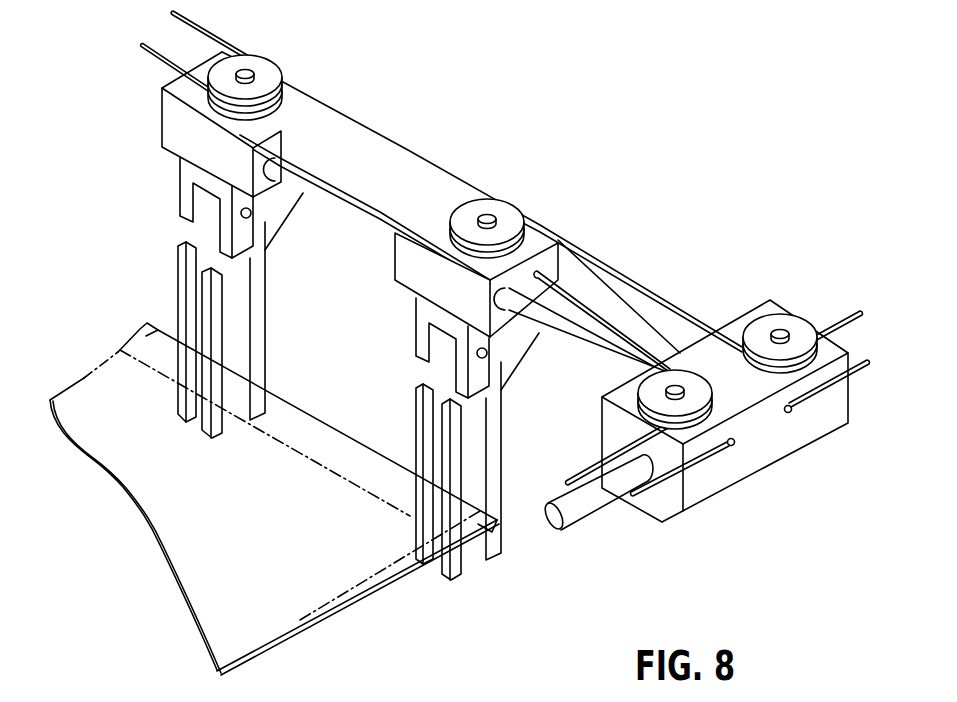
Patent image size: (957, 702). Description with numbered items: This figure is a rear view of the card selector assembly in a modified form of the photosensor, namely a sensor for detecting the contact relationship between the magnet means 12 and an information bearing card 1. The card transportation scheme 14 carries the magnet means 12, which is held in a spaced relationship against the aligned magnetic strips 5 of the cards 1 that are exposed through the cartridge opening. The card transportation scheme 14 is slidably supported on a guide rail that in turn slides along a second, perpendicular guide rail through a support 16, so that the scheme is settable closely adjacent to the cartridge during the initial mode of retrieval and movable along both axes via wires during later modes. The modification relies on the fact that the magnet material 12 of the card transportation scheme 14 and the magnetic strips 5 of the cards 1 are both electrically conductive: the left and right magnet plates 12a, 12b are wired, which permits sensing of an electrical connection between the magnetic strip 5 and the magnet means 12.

The information bearing card 1 is at (293, 612).
The magnetic strip 5 is at (407, 508).
The magnet means 12 is at (255, 311).
The left magnet plate 12a is at (472, 437).
The right magnet plate 12b is at (187, 287).
The card transportation scheme 14 is at (397, 159).
The support 16 is at (706, 418).